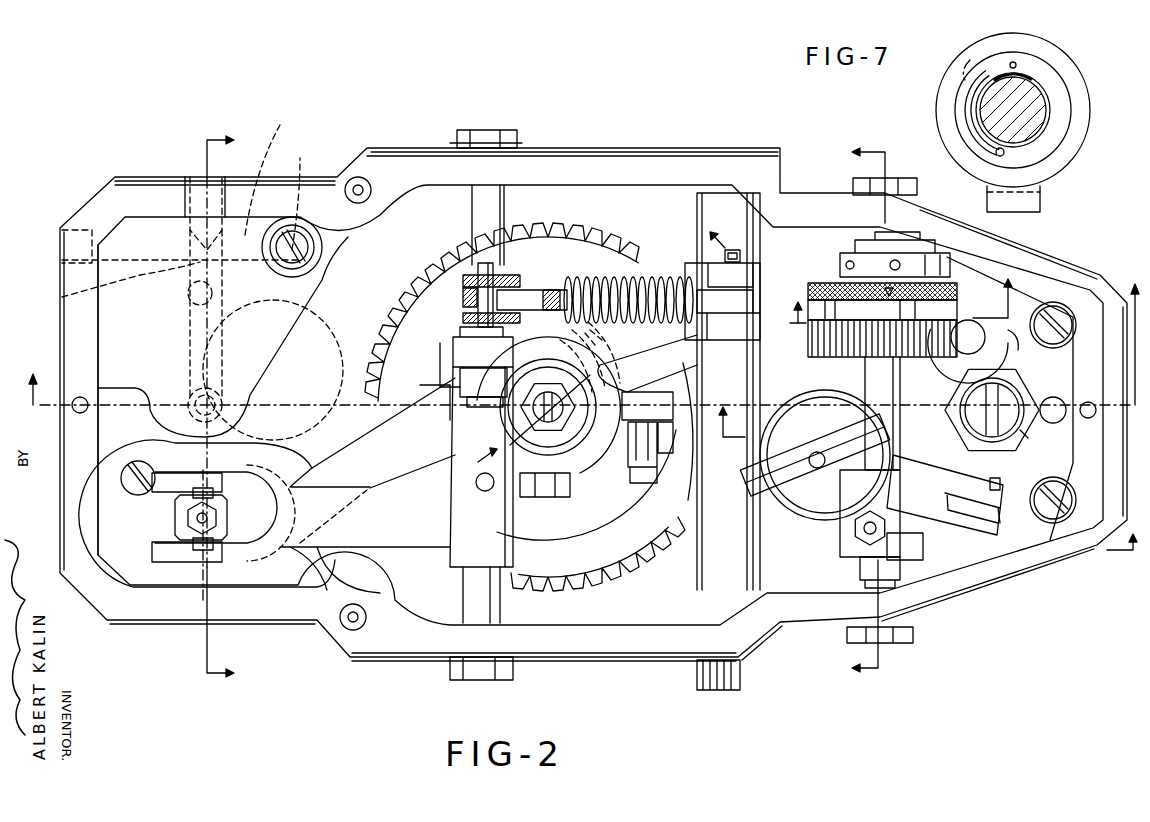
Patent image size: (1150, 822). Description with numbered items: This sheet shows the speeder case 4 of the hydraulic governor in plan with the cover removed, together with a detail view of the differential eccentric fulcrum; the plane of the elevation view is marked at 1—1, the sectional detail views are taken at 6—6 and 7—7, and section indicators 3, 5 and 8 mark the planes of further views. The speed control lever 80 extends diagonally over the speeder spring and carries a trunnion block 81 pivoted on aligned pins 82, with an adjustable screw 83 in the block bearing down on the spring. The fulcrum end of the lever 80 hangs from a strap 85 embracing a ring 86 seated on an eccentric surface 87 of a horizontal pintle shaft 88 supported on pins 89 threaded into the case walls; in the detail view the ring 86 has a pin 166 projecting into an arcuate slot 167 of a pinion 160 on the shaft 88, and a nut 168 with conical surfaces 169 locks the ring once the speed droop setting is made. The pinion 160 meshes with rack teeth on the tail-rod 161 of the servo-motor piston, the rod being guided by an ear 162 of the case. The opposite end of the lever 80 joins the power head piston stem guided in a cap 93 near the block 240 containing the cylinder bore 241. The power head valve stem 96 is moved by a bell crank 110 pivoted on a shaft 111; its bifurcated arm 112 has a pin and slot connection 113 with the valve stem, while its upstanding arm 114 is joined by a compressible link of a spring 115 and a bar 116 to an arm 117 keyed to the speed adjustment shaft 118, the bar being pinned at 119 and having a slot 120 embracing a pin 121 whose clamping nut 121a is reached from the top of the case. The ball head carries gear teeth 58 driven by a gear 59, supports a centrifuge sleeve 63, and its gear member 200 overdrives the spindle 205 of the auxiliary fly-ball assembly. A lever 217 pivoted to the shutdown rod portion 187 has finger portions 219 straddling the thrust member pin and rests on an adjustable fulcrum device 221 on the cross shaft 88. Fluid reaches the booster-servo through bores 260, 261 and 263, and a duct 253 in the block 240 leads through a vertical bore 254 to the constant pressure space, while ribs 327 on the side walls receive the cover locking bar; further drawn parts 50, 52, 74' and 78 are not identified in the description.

In FIG. 2, the section plane 1— 1 is at (575, 340).
In FIG. 2, the section line 3- 3 is at (225, 399).
In FIG. 2, the frame 4 is at (372, 150).
In FIG. 2, the section line 5- 5 is at (591, 345).
In FIG. 2, the section plane 6— 6 is at (858, 414).
In FIG. 2, the section plane 7— 7 is at (894, 294).
In FIG. 2, the section line 8- 8 is at (922, 471).
In FIG. 2, the spring plate 50 is at (662, 460).
In FIG. 2, the stop block 52 is at (662, 415).
In FIG. 2, the gear teeth 58 is at (569, 357).
In FIG. 2, the driving gear 59 is at (602, 332).
In FIG. 2, the sleeve 63 is at (632, 553).
In FIG. 2, the bearing nut 74' is at (1040, 443).
In FIG. 2, the bearing bushing 78 is at (1005, 408).
In FIG. 2, the speed control lever 80 is at (660, 350).
In FIG. 2, the block 81 is at (542, 497).
In FIG. 2, the aligned pins 82 is at (562, 435).
In FIG. 2, the adjustable screw 83 is at (575, 440).
In FIG. 2, the strap 85 is at (812, 300).
In FIG. 7, the strap 85 is at (987, 185).
In FIG. 2, the ring 86 is at (958, 290).
In FIG. 7, the ring 86 is at (960, 105).
In FIG. 7, the eccentric surface 87 is at (1050, 128).
In FIG. 2, the pintle shaft 88 is at (890, 437).
In FIG. 7, the pintle shaft 88 is at (975, 130).
In FIG. 2, the aligned pins 89 is at (853, 185).
In FIG. 7, the aligned pins 89 is at (1065, 98).
In FIG. 2, the cap 93 is at (148, 508).
In FIG. 2, the power head valve stem 96 is at (217, 515).
In FIG. 2, the bell crank 110 is at (478, 525).
In FIG. 2, the horizontal shaft 111 is at (472, 222).
In FIG. 2, the bifurcated arm 112 is at (360, 537).
In FIG. 2, the pin and slot connection 113 is at (193, 556).
In FIG. 2, the upstanding arm 114 is at (460, 348).
In FIG. 2, the spring 115 is at (620, 262).
In FIG. 2, the bar 116 is at (548, 288).
In FIG. 2, the arm 117 is at (745, 263).
In FIG. 2, the speed adjustment shaft 118 is at (735, 561).
In FIG. 2, the pivot pin 119 is at (733, 250).
In FIG. 2, the slot 120 is at (510, 275).
In FIG. 2, the pin 121 is at (463, 302).
In FIG. 2, the clamping nut 121a is at (460, 388).
In FIG. 2, the pinion 160 is at (912, 350).
In FIG. 2, the rod 161 is at (972, 330).
In FIG. 2, the ear formation 162 is at (1012, 348).
In FIG. 7, the pin 166 is at (1016, 62).
In FIG. 7, the arcuate slot 167 is at (970, 62).
In FIG. 2, the nut 168 is at (845, 258).
In FIG. 7, the conical surfaces 169 is at (1032, 80).
In FIG. 2, the shutdown rod portion 187 is at (992, 492).
In FIG. 2, the gear member 200 is at (580, 235).
In FIG. 2, the spindle element 205 is at (812, 395).
In FIG. 2, the lever 217 is at (940, 498).
In FIG. 2, the finger portions 219 is at (825, 490).
In FIG. 2, the adjustable fulcrum device 221 is at (850, 558).
In FIG. 2, the block 240 is at (105, 336).
In FIG. 2, the cylinder bore 241 is at (62, 302).
In FIG. 2, the duct 253 is at (195, 296).
In FIG. 2, the vertical bore 254 is at (222, 405).
In FIG. 2, the bore 260 is at (322, 270).
In FIG. 2, the bore 261 is at (297, 195).
In FIG. 2, the bore 263 is at (274, 173).
In FIG. 2, the ribs 327 is at (595, 170).